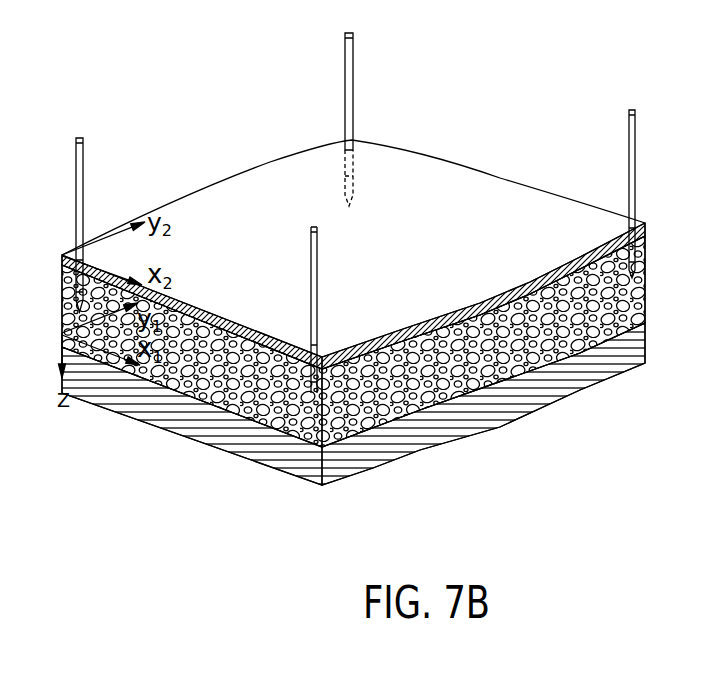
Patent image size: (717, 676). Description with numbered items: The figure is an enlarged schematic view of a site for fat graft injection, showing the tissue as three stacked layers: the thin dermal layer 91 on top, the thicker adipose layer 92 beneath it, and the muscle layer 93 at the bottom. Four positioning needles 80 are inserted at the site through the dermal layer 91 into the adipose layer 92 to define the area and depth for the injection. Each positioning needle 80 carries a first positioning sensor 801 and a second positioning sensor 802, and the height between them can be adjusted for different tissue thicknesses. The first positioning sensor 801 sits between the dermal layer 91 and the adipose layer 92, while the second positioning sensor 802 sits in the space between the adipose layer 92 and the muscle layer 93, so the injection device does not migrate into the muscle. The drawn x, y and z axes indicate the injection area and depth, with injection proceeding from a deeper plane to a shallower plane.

The positioning needle 80 is at (448, 104).
The first positioning sensor 801 is at (356, 137).
The second positioning sensor 802 is at (350, 186).
The dermal layer 91 is at (636, 257).
The adipose layer 92 is at (632, 296).
The muscle layer 93 is at (632, 346).